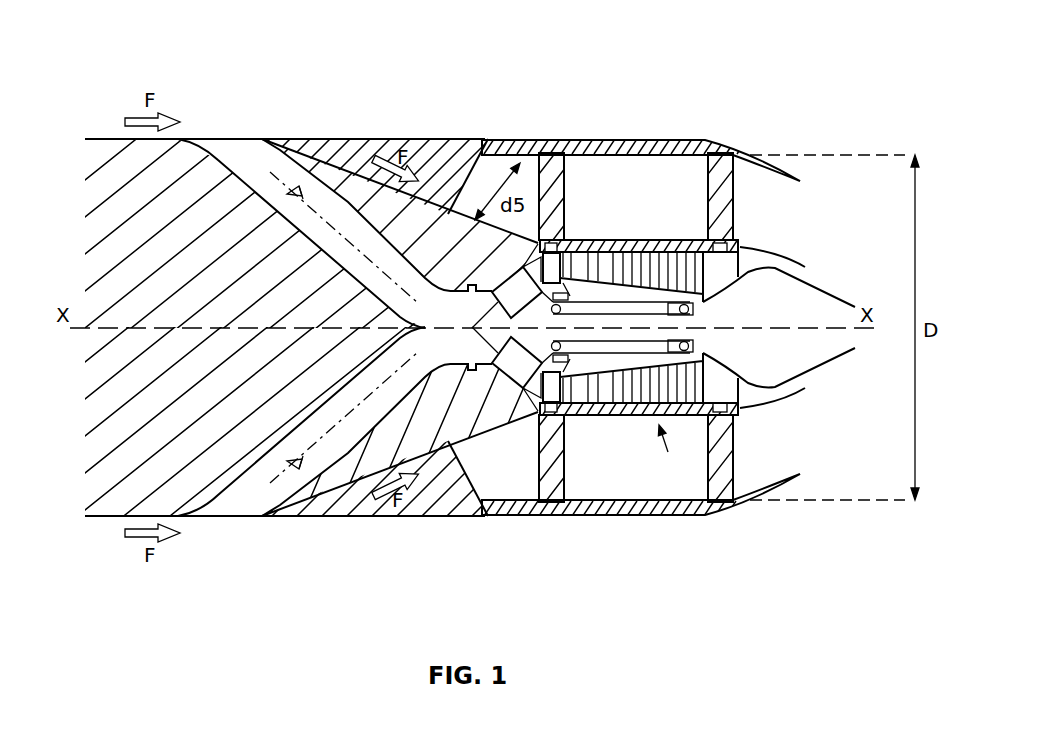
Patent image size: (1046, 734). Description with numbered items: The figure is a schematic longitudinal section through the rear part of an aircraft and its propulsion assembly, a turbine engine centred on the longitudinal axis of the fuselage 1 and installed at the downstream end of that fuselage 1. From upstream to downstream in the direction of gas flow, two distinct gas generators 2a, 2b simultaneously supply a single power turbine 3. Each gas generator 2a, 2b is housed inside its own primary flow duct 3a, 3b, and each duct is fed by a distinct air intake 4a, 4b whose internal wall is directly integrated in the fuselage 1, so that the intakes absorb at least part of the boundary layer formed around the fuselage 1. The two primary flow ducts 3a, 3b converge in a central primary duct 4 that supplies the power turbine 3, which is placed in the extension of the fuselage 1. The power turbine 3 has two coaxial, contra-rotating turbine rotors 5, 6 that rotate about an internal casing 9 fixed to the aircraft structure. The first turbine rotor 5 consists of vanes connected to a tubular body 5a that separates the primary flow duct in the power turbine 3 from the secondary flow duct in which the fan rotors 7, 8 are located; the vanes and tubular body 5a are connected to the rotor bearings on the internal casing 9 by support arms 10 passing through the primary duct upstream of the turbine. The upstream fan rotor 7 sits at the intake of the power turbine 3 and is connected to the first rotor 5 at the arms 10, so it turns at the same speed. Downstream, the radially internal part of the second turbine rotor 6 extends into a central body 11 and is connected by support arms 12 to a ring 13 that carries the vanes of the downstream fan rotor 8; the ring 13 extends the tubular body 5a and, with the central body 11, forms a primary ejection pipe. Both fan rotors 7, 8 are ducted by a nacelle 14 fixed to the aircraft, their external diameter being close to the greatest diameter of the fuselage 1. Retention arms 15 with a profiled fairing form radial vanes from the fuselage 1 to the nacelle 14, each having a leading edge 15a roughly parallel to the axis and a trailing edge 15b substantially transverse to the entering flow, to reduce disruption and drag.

The fuselage 1 is at (102, 138).
The gas generator 2a is at (340, 215).
The gas generator 2b is at (342, 440).
The power turbine 3 is at (668, 455).
The primary flow duct 3a is at (270, 173).
The primary flow duct 3b is at (272, 478).
The central primary duct 4 is at (452, 307).
The air intake 4a is at (210, 138).
The air intake 4b is at (210, 517).
The first turbine rotor 5 is at (583, 267).
The tubular body 5a is at (608, 240).
The second turbine rotor 6 is at (673, 267).
The upstream fan rotor 7 is at (550, 187).
The downstream fan rotor 8 is at (722, 177).
The internal casing 9 is at (700, 313).
The support arms 10 is at (535, 275).
The central body 11 is at (843, 297).
The support arms 12 is at (728, 265).
The ring 13 is at (740, 247).
The nacelle 14 is at (633, 147).
The retention arms 15 is at (457, 163).
The leading edge 15a is at (335, 138).
The trailing edge 15b is at (494, 152).